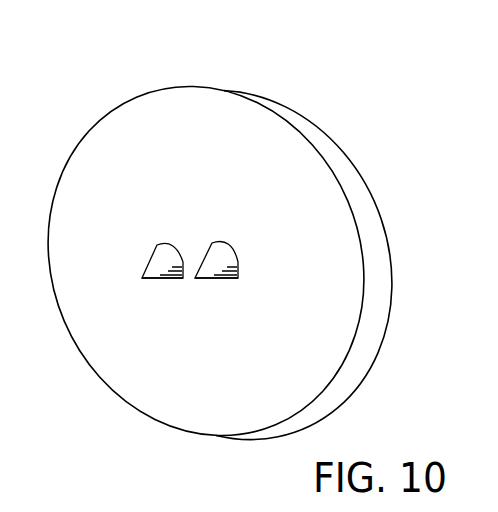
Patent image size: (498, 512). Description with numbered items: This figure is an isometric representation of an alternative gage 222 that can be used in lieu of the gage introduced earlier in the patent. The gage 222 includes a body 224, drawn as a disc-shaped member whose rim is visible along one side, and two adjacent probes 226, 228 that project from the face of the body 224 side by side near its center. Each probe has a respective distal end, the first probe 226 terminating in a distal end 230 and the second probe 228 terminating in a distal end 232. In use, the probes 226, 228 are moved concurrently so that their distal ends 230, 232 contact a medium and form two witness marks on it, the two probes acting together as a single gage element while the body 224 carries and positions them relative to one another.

The gage 222 is at (197, 63).
The body 224 is at (368, 205).
The probe 226 is at (157, 257).
The probe 228 is at (226, 252).
The distal end 230 is at (142, 278).
The distal end 232 is at (195, 278).